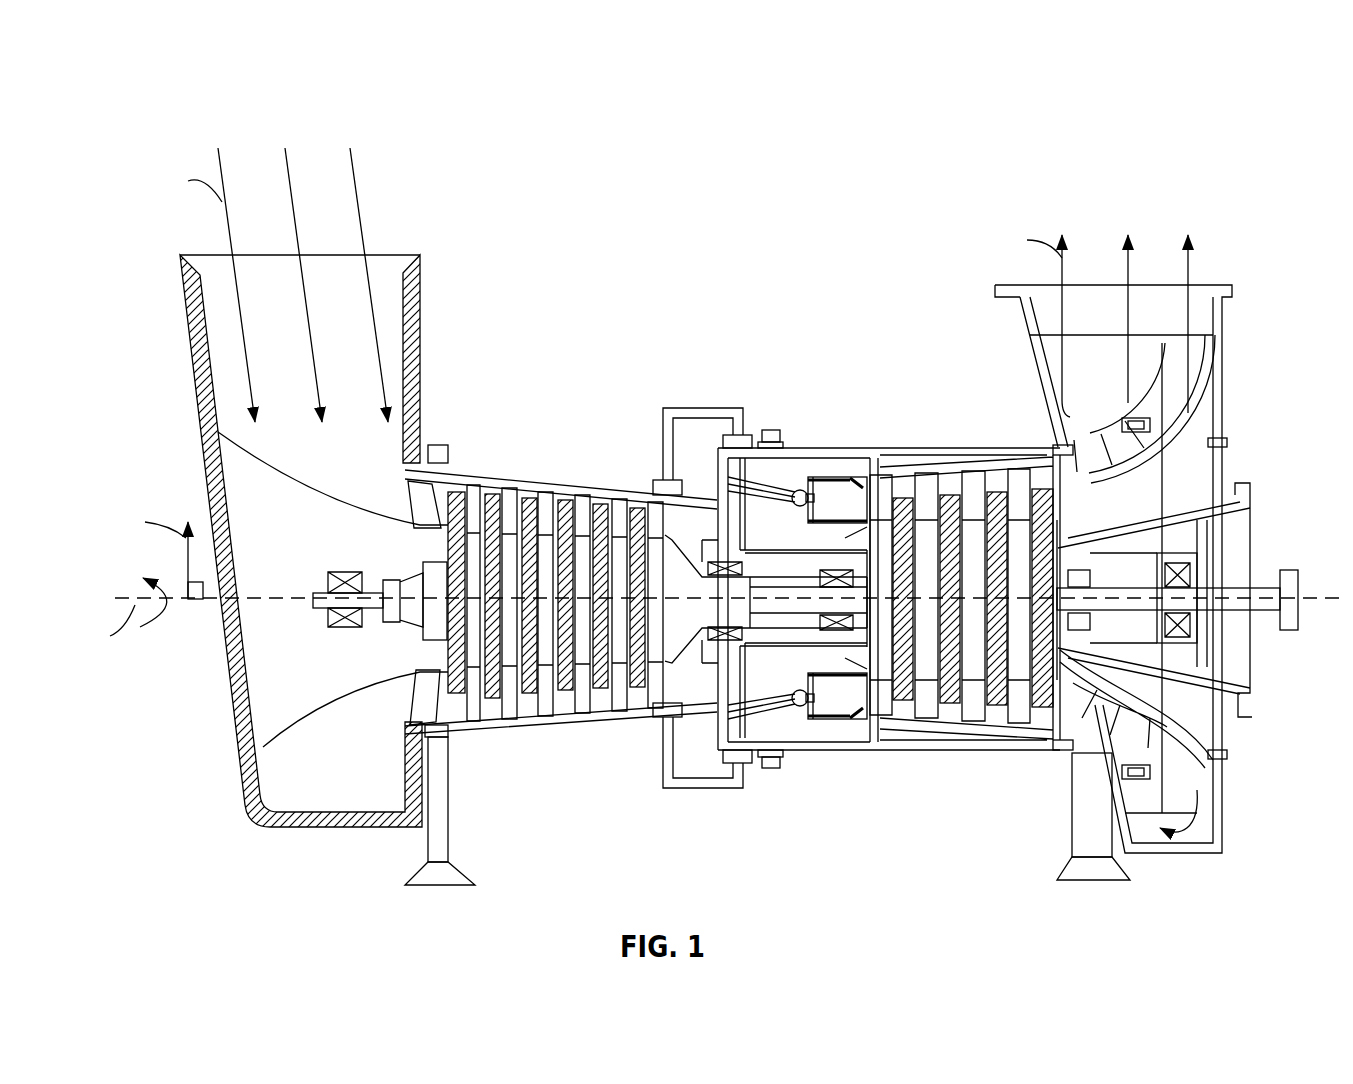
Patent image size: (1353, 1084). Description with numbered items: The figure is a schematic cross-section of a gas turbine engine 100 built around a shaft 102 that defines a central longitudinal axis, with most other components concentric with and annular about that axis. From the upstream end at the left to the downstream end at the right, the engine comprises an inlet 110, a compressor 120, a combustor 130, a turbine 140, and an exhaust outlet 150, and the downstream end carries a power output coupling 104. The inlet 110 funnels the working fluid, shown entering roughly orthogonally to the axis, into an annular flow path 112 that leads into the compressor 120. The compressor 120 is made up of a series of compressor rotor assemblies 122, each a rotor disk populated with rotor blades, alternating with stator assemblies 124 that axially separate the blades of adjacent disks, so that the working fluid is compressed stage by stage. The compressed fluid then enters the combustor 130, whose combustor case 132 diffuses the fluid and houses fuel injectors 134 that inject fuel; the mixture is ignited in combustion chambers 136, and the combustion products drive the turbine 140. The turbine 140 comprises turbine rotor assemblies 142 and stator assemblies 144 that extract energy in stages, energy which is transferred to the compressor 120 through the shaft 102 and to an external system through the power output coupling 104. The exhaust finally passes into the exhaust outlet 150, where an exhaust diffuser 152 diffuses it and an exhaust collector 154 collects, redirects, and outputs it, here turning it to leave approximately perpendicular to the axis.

The gas turbine engine 100 is at (143, 86).
The inlet 110 is at (420, 108).
The annular flow path 112 is at (403, 486).
The compressor 120 is at (705, 108).
The compressor rotor assembly 122 is at (493, 700).
The stator assembly 124 is at (510, 493).
The combustor 130 is at (857, 108).
The combustor case 132 is at (815, 468).
The fuel injector 134 is at (793, 479).
The combustion chamber 136 is at (840, 476).
The turbine 140 is at (1050, 108).
The turbine rotor assembly 142 is at (950, 698).
The stator assembly 144 is at (922, 480).
The exhaust outlet 150 is at (1258, 152).
The exhaust diffuser 152 is at (1113, 445).
The exhaust collector 154 is at (1027, 352).
The shaft 102 is at (313, 594).
The power output coupling 104 is at (1293, 572).